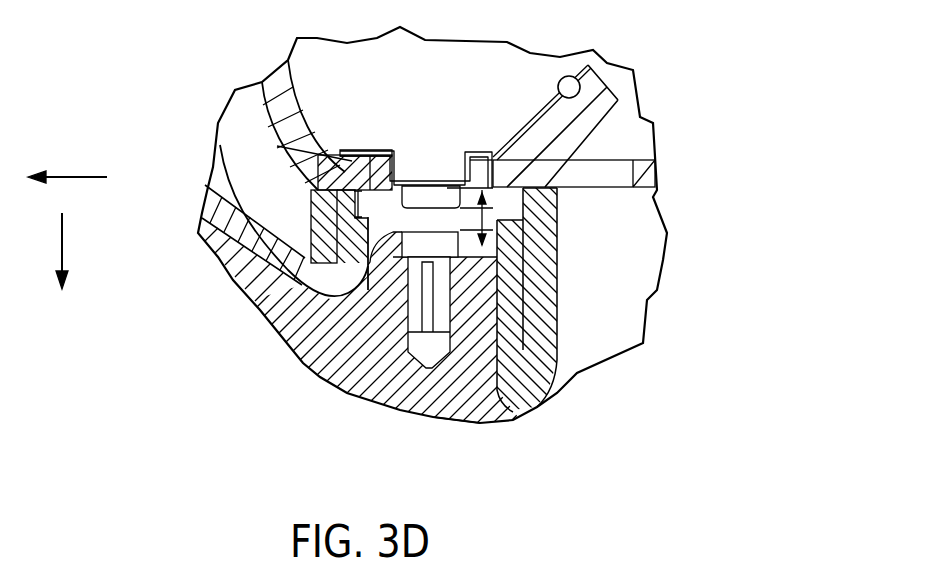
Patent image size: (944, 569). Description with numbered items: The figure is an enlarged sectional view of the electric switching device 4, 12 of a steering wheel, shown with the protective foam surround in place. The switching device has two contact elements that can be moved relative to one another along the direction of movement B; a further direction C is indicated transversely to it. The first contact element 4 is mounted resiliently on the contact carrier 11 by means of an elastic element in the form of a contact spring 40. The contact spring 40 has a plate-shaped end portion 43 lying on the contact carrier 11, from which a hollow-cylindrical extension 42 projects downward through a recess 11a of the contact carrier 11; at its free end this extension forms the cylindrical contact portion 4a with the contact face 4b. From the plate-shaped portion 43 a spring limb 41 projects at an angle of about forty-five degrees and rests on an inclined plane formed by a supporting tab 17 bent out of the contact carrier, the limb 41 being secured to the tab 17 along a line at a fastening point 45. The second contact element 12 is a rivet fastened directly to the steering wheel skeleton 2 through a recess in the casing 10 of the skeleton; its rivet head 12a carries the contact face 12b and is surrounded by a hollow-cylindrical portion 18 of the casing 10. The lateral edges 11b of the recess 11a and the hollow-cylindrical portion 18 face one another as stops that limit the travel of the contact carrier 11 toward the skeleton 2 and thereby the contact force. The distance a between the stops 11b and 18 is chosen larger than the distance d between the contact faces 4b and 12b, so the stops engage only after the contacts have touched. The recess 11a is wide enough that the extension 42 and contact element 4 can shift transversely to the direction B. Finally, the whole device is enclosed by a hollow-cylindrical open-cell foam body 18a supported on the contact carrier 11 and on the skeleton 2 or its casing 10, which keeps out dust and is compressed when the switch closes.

The steering wheel skeleton 2 is at (450, 418).
The contact element 4 is at (422, 180).
The contact portion 4a is at (433, 184).
The contact face 4b is at (427, 210).
The casing 10 is at (533, 402).
The contact carrier 11 is at (260, 110).
The recess 11a is at (380, 151).
The lateral edges 11b is at (277, 146).
The contact element 12 is at (408, 308).
The rivet head 12a is at (558, 325).
The contact face 12b is at (335, 300).
The supporting tab 17 is at (600, 107).
The hollow-cylindrical portion 18 is at (258, 311).
The foam body 18a is at (234, 276).
The contact spring 40 is at (482, 136).
The spring limb 41 is at (524, 115).
The hollow-cylindrical extension 42 is at (311, 205).
The plate-shaped end portion 43 is at (340, 151).
The fastening point 45 is at (563, 76).
The distance between stops a is at (358, 204).
The distance between contact faces d is at (493, 208).
The direction of movement B is at (63, 237).
The direction C is at (83, 174).